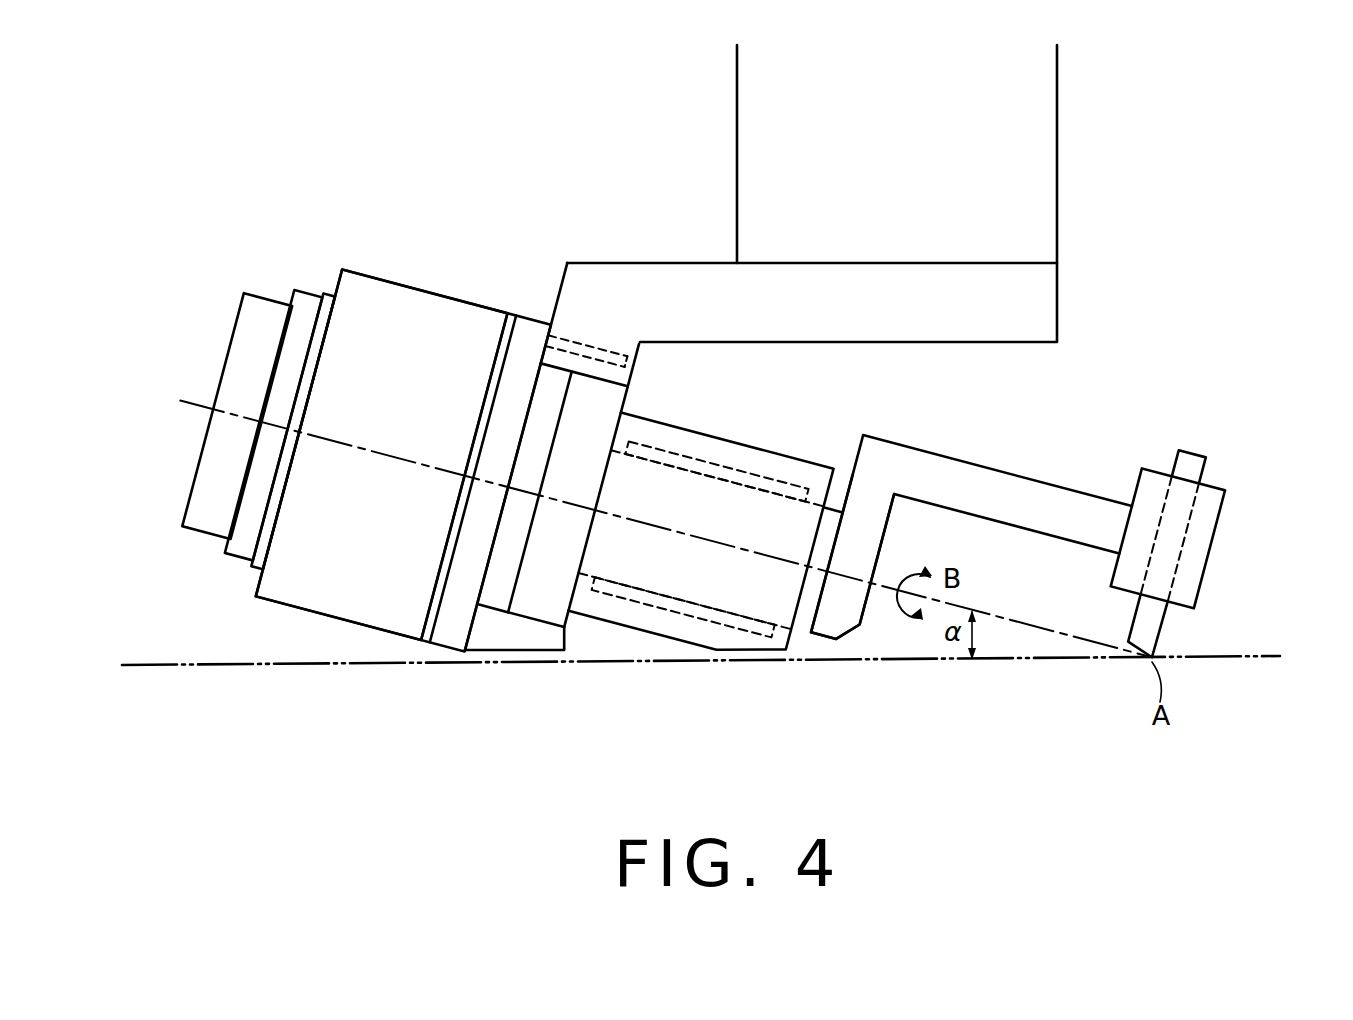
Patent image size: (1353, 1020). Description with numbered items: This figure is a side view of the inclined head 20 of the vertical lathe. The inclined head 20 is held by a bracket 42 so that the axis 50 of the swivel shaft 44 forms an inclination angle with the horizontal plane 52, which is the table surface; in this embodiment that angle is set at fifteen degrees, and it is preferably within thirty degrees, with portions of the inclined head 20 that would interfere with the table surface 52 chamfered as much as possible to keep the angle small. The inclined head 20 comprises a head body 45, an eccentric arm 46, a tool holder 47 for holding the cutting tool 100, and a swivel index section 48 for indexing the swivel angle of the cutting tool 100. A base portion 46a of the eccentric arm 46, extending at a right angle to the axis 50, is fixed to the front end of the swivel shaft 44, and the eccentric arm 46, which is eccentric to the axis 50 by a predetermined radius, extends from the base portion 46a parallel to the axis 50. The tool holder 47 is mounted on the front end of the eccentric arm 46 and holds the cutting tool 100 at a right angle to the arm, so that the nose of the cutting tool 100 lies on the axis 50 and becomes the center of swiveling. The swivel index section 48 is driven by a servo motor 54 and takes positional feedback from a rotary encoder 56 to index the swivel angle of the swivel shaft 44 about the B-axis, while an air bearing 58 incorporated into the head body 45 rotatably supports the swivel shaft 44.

The inclined head 20 is at (663, 697).
The bracket 42 is at (640, 283).
The swivel shaft 44 is at (802, 620).
The head body 45 is at (596, 602).
The eccentric arm 46 is at (987, 488).
The base portion 46a is at (870, 538).
The tool holder 47 is at (1208, 499).
The swivel index section 48 is at (388, 276).
The axis 50 is at (380, 458).
The horizontal plane 52 is at (150, 664).
The servo motor 54 is at (447, 320).
The rotary encoder 56 is at (240, 353).
The air bearing 58 is at (725, 468).
The cutting tool 100 is at (1152, 622).